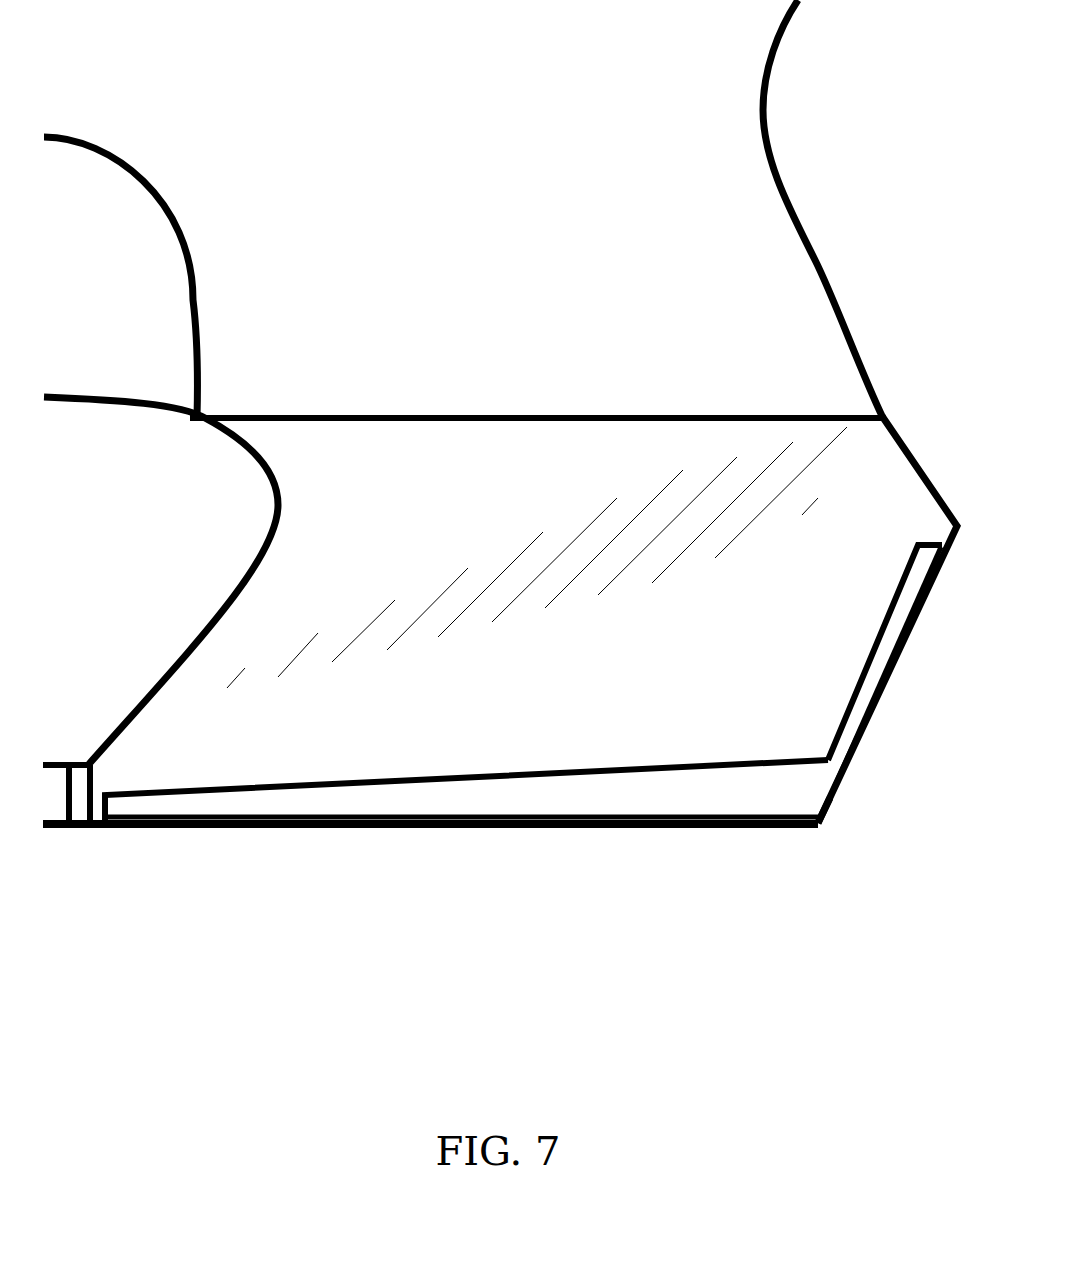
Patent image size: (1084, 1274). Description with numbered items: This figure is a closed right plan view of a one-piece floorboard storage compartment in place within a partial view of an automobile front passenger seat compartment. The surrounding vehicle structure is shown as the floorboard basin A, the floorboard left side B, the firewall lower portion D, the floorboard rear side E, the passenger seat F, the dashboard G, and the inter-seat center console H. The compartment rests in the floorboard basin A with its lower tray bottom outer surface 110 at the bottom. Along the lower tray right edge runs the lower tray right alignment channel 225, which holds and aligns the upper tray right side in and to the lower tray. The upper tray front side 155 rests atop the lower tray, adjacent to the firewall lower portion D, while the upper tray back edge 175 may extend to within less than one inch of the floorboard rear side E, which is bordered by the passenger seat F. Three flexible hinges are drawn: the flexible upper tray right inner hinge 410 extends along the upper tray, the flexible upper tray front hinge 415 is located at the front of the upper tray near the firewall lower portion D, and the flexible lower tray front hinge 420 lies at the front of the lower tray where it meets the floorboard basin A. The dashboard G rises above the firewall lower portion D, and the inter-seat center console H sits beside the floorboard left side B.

The lower tray bottom outer surface 110 is at (434, 847).
The upper tray front side 155 is at (867, 603).
The upper tray back edge 175 is at (125, 784).
The lower tray right alignment channel 225 is at (462, 797).
The flexible upper tray right inner hinge 410 is at (370, 764).
The flexible upper tray front hinge 415 is at (899, 531).
The flexible lower tray front hinge 420 is at (799, 797).
The floorboard basin A is at (571, 846).
The floorboard left side B is at (516, 397).
The firewall lower portion D is at (926, 628).
The floorboard rear side E is at (77, 743).
The passenger seat F is at (161, 580).
The dashboard G is at (827, 209).
The inter-seat center console H is at (121, 277).